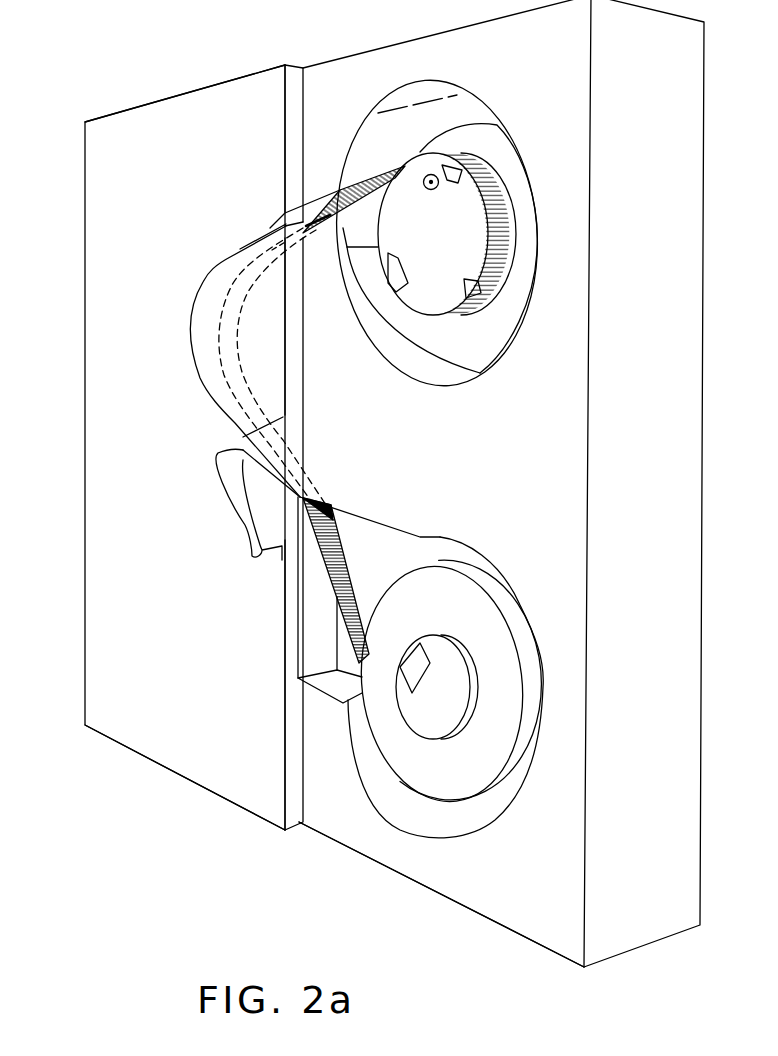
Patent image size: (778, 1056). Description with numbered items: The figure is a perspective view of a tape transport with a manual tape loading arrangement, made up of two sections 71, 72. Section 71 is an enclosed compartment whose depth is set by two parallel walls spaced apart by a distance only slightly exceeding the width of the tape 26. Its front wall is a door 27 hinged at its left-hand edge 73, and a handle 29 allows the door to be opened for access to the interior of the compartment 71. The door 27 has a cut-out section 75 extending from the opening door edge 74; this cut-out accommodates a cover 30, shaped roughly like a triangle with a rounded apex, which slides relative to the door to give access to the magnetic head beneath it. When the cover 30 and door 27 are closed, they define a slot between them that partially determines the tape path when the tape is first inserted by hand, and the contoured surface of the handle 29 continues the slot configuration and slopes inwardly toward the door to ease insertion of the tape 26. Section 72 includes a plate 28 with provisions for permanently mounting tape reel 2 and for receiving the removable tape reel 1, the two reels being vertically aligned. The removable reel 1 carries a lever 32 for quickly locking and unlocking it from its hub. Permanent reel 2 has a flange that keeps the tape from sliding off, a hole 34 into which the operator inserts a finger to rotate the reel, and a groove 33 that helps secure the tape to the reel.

The removable tape reel 1 is at (503, 722).
The permanent tape reel 2 is at (475, 215).
The tape 26 is at (337, 582).
The door 27 is at (160, 730).
The plate 28 is at (500, 908).
The handle 29 is at (245, 523).
The cover 30 is at (205, 345).
The lever 32 is at (405, 657).
The groove 33 is at (497, 296).
The hole 34 is at (434, 174).
The section 71 is at (247, 74).
The section 72 is at (471, 24).
The left-hand edge 73 is at (84, 445).
The opening door edge 74 is at (285, 758).
The cut-out section 75 is at (223, 266).